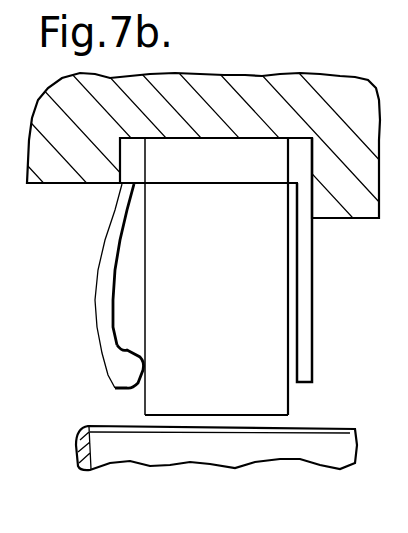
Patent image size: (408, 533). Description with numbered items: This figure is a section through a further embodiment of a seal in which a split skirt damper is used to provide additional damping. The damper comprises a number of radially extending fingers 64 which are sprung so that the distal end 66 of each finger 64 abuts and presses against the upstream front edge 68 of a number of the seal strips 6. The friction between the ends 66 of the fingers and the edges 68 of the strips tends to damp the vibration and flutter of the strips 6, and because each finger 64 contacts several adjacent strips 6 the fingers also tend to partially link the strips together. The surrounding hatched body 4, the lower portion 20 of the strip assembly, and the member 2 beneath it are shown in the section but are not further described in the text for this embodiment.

The housing block 4 is at (211, 97).
The seal strips 6 is at (247, 285).
The upstream front edge 68 is at (148, 243).
The radially extending fingers 64 is at (103, 293).
The distal end 66 is at (130, 367).
The base 20 is at (271, 402).
The bar 2 is at (222, 449).